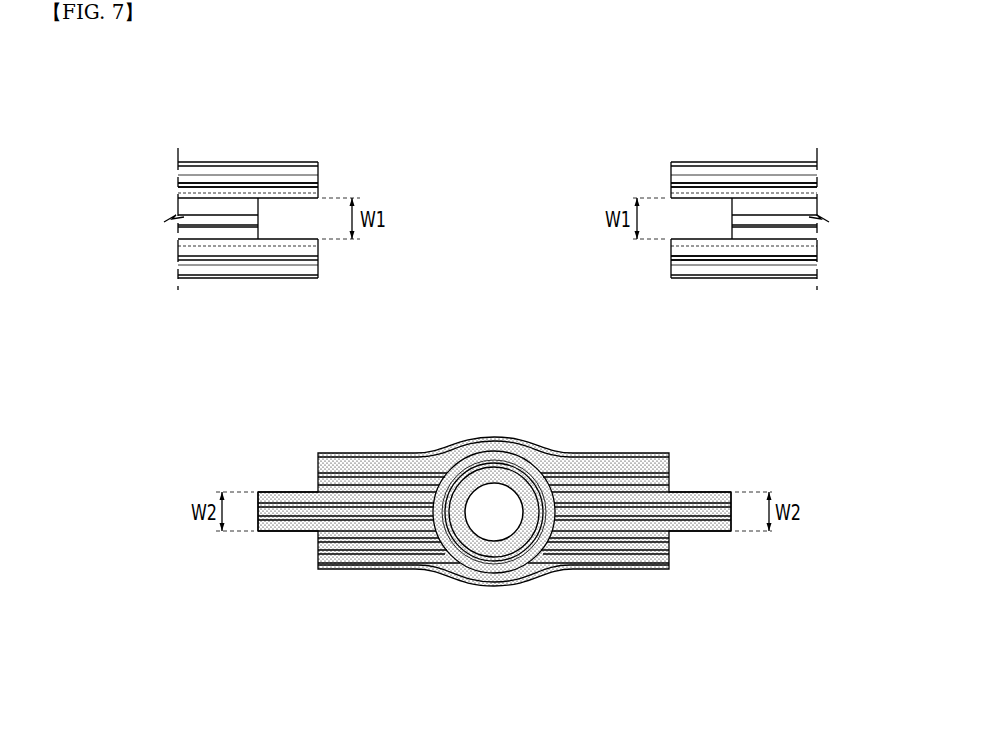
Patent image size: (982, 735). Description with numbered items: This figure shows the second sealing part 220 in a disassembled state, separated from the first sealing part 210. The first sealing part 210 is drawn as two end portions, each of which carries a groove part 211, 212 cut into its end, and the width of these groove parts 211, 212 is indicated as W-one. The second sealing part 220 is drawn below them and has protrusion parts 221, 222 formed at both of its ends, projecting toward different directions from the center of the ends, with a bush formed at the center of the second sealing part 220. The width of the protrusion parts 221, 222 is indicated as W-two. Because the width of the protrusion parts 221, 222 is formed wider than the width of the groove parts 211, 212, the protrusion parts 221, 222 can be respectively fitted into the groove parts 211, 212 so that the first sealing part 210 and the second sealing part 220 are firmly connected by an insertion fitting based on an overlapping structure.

The first sealing part 210 is at (218, 148).
The groove part 211 is at (293, 187).
The groove part 212 is at (697, 187).
The second sealing part 220 is at (453, 582).
The protrusion part 221 is at (283, 512).
The protrusion part 222 is at (707, 513).